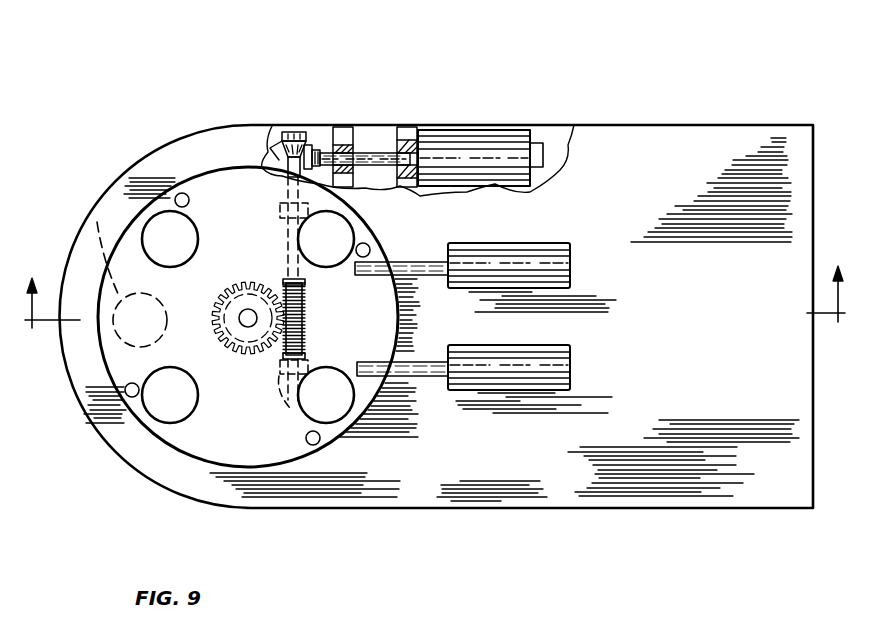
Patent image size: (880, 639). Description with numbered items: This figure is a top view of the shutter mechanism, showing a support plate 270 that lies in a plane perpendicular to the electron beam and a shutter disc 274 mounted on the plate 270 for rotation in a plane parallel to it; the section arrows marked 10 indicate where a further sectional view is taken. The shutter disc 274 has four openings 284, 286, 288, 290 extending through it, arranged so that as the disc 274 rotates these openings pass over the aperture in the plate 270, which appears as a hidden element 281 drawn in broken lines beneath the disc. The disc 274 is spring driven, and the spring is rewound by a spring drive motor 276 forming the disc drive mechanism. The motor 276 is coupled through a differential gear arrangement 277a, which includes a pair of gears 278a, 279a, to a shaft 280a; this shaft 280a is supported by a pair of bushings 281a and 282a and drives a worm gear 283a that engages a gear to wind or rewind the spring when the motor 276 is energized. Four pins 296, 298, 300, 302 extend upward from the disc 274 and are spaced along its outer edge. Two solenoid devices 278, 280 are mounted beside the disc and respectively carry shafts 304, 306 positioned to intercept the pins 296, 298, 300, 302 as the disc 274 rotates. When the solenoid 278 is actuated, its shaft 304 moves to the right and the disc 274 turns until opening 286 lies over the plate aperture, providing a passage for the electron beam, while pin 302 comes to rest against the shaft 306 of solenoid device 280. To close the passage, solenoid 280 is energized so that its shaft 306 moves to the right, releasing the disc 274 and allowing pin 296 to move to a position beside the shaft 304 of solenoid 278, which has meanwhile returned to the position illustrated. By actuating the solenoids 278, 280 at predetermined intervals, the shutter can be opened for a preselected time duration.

The section line 10- 10 is at (433, 284).
The support plate 270 is at (755, 484).
The shutter disc 274 is at (230, 190).
The spring drive motor 276 is at (536, 80).
The differential gear arrangement 277a is at (279, 126).
The solenoid device 278 is at (540, 260).
The gear 278a is at (292, 132).
The gear 279a is at (313, 113).
The solenoid device 280 is at (537, 378).
The shaft 280a is at (290, 275).
The hidden bore 281 is at (90, 222).
The bushing 281a is at (288, 242).
The bushing 282a is at (290, 413).
The worm gear 283a is at (306, 316).
The opening 284 is at (140, 185).
The opening 286 is at (167, 422).
The opening 288 is at (335, 415).
The opening 290 is at (334, 236).
The pin 296 is at (152, 238).
The pin 298 is at (125, 397).
The pin 300 is at (313, 445).
The pin 302 is at (364, 243).
The shaft 304 is at (410, 262).
The shaft 306 is at (403, 372).